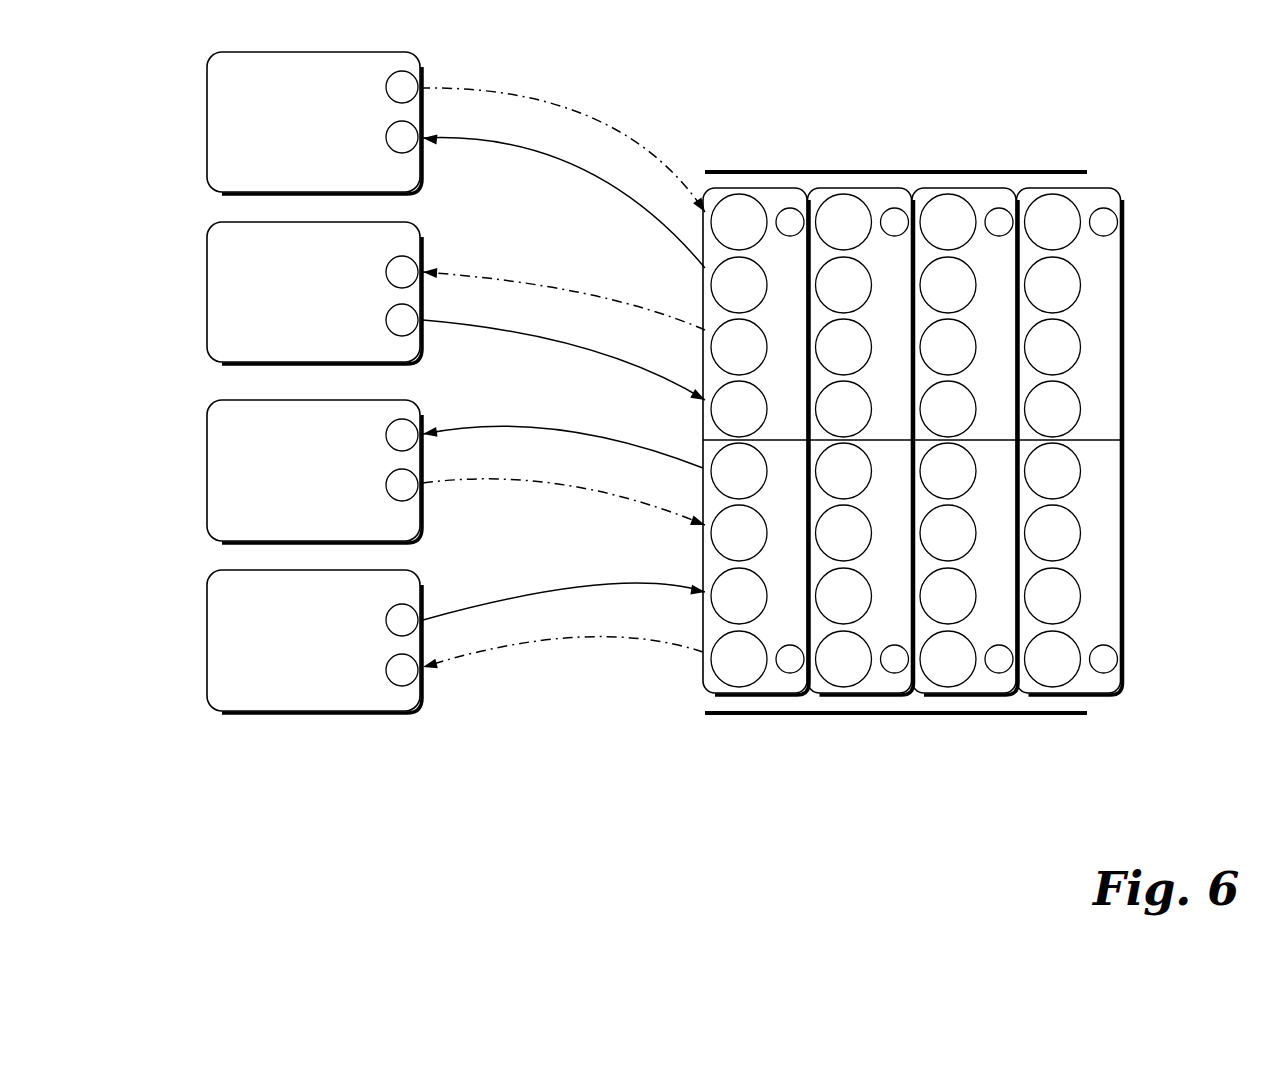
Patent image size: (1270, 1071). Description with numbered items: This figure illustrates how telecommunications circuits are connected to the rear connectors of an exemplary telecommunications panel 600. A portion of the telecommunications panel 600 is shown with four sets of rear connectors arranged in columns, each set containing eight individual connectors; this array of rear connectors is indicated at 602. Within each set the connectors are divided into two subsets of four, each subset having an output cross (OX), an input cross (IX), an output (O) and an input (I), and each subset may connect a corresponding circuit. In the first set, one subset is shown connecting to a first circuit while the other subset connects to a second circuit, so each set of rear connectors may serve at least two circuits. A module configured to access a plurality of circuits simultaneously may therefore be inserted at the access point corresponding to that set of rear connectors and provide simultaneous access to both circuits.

The telecommunications panel 600 is at (1022, 48).
The switch fabric / port array 602 is at (1062, 164).